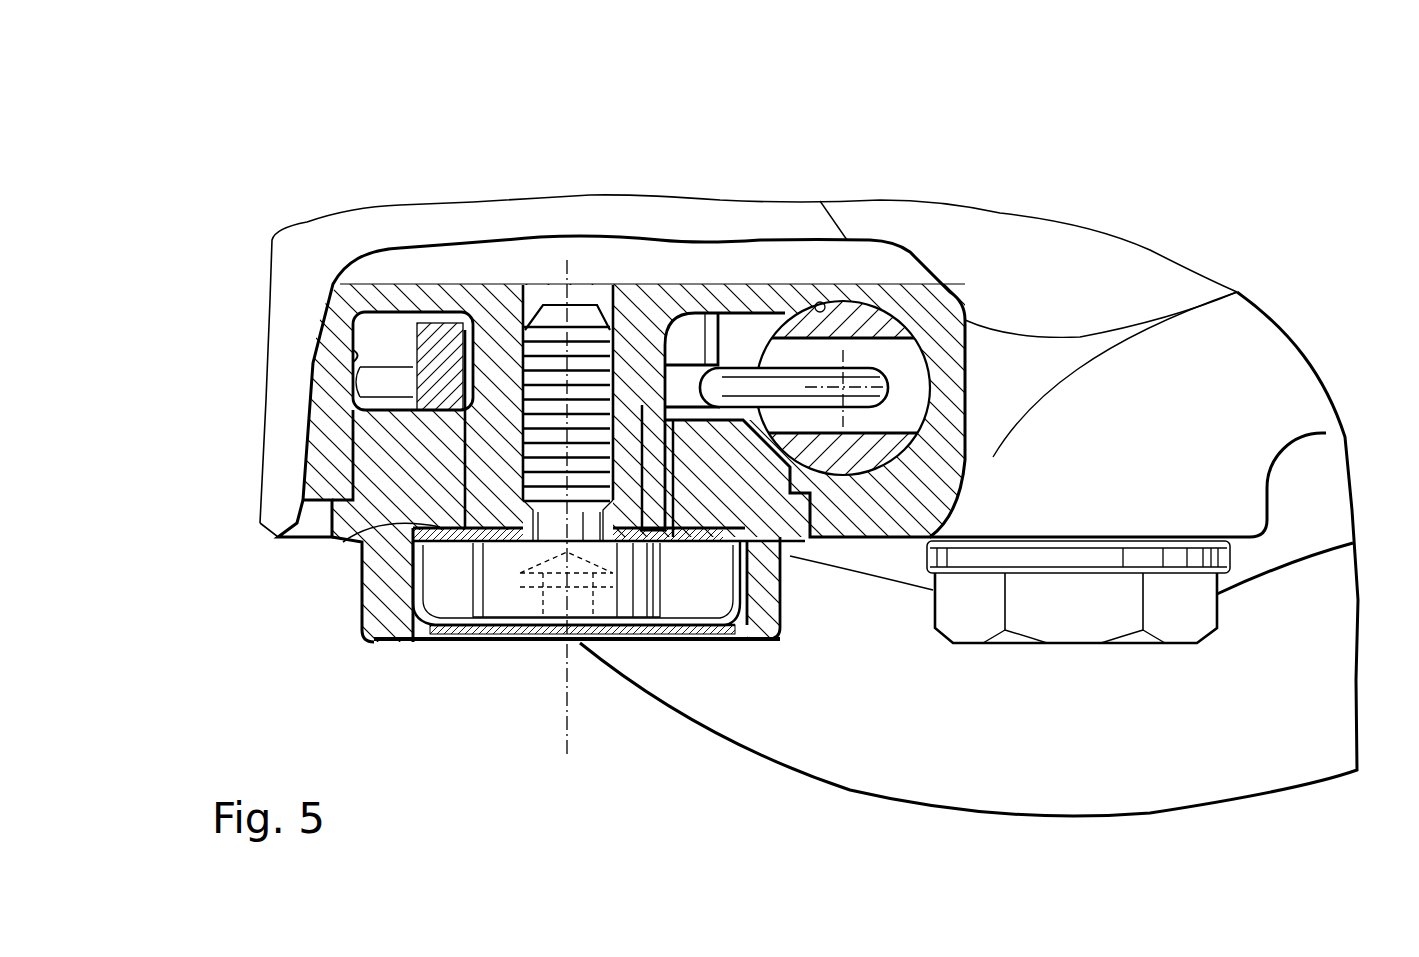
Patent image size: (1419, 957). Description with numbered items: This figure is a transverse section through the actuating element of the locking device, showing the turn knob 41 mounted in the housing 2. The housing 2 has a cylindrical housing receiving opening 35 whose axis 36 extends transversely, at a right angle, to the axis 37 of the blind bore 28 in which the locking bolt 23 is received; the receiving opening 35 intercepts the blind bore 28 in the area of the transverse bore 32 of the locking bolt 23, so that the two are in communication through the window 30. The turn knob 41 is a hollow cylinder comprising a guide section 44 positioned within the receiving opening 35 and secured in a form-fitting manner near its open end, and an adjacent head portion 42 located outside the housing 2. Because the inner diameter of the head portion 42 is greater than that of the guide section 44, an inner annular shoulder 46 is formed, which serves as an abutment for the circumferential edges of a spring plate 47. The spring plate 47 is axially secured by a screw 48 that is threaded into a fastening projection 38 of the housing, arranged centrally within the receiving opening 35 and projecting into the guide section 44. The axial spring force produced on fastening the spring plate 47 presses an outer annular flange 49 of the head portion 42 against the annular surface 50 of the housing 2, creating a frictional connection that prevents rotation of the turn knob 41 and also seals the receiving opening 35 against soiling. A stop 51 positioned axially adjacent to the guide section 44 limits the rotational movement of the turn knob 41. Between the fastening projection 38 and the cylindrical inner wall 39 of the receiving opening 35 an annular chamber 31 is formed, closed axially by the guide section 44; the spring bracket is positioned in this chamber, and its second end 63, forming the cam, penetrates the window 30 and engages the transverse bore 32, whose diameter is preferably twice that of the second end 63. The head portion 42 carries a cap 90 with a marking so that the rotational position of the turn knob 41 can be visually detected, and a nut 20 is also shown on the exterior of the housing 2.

The housing 2 is at (333, 327).
The nut 20 is at (1037, 613).
The locking bolt 23 is at (862, 325).
The blind bore 28 is at (823, 302).
The window 30 is at (750, 345).
The annular chamber 31 is at (388, 330).
The transverse bore 32 is at (897, 420).
The cylindrical housing receiving opening 35 is at (377, 330).
The axis 36 is at (568, 708).
The axis 37 is at (893, 375).
The fastening projection 38 is at (642, 418).
The cylindrical inner wall 39 is at (347, 360).
The turn knob 41 is at (364, 647).
The head portion 42 is at (388, 630).
The guide section 44 is at (368, 440).
The inner annular shoulder 46 is at (350, 547).
The spring plate 47 is at (440, 548).
The screw 48 is at (648, 600).
The outer annular flange 49 is at (337, 477).
The annular surface 50 is at (327, 506).
The stop 51 is at (440, 340).
The second end 63 is at (893, 388).
The cap 90 is at (623, 628).